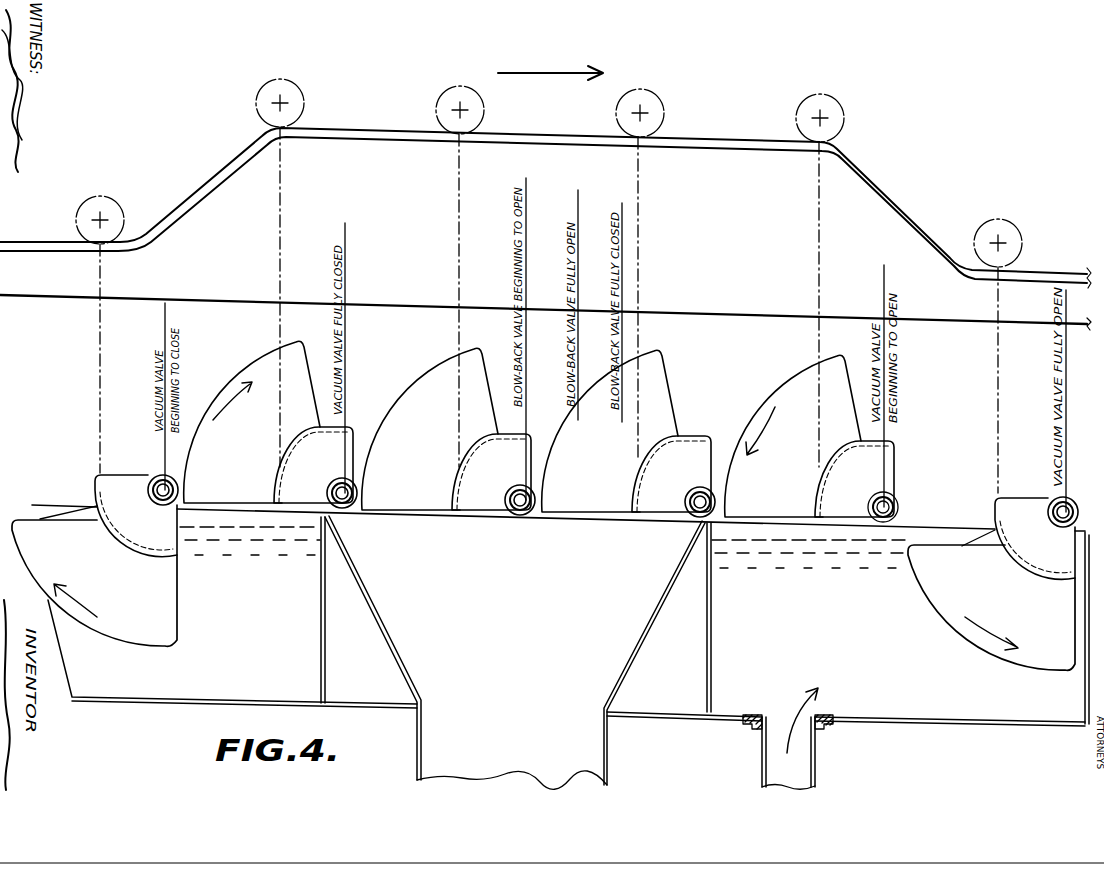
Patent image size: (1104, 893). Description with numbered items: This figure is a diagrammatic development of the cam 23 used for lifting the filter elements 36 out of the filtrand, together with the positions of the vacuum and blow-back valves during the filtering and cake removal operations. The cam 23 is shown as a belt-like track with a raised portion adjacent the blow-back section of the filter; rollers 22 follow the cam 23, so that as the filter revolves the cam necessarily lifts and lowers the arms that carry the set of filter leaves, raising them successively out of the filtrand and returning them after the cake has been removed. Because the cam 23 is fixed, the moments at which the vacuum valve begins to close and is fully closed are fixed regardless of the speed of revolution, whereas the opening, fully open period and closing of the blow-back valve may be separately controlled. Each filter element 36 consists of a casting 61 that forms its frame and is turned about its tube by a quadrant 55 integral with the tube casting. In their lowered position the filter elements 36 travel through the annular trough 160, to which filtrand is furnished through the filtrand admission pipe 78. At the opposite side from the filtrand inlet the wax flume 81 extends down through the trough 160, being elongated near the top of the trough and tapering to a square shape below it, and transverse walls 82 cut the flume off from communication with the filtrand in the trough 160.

The rollers 22 is at (109, 202).
The cam 23 is at (890, 210).
The filter element 36 is at (181, 605).
The quadrant 55 is at (894, 463).
The casting 61 is at (796, 378).
The filtrand admission pipe 78 is at (814, 758).
The wax flume 81 is at (608, 744).
The transverse walls 82 is at (322, 617).
The annular trough 160 is at (943, 713).